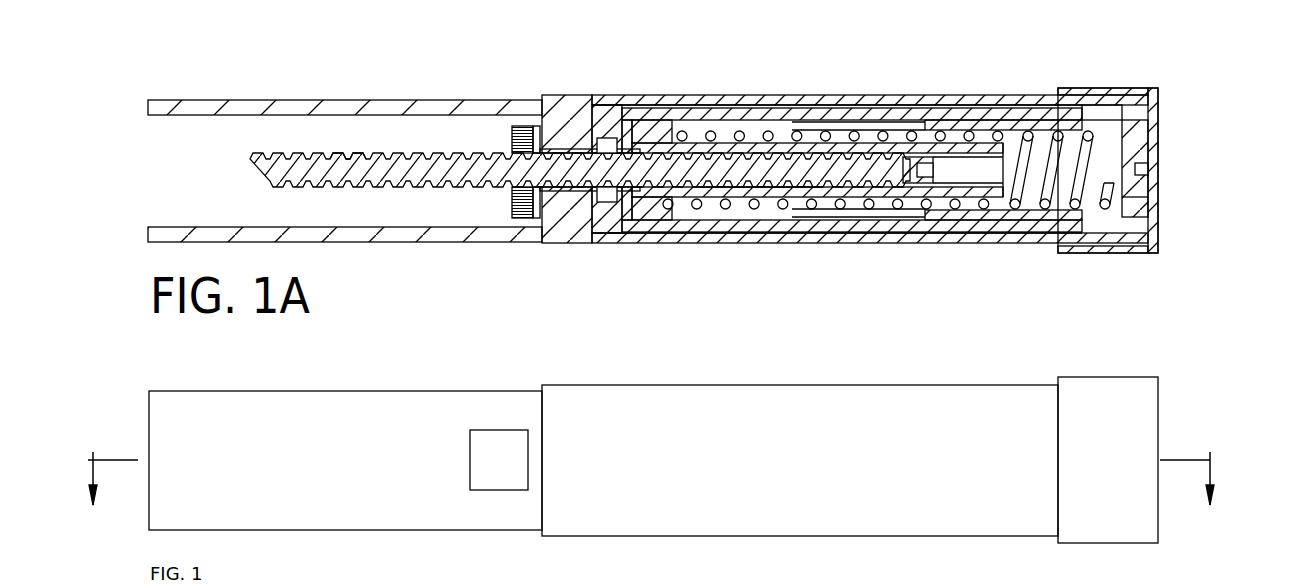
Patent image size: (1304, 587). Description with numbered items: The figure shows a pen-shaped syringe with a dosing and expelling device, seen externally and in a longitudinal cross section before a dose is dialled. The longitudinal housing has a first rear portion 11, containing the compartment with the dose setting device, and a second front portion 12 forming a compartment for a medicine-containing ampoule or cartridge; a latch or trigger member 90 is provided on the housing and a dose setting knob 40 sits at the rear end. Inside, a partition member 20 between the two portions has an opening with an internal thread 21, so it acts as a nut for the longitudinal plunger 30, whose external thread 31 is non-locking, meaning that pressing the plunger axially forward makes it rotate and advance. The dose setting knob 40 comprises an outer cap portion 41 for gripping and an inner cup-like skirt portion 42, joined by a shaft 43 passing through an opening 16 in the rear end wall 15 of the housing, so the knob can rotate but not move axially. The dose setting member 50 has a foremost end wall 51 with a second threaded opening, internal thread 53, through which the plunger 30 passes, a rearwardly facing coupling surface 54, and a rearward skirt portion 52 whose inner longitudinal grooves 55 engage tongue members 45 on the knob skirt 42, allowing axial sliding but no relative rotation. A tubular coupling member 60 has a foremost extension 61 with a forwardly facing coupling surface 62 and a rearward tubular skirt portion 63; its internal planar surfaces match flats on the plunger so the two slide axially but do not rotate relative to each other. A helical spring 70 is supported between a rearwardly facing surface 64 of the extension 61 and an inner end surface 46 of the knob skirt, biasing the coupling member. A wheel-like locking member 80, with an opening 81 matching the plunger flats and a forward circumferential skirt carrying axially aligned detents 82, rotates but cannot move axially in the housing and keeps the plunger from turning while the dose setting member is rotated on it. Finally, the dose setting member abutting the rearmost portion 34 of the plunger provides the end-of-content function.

In FIG. 1, the first (rear) portion 11 is at (925, 430).
In FIG. 1, the second (front) portion 12 is at (342, 430).
In FIG. 1A, the rear end wall 15 is at (1142, 110).
In FIG. 1A, the opening 16 is at (1142, 155).
In FIG. 1A, the partition member 20 is at (556, 114).
In FIG. 1A, the internal thread 21 is at (572, 150).
In FIG. 1A, the plunger 30 is at (282, 173).
In FIG. 1A, the external thread 31 is at (348, 157).
In FIG. 1A, the rearmost portion 34 is at (937, 172).
In FIG. 1, the dose setting knob 40 is at (653, 437).
In FIG. 1A, the outer cap portion 41 is at (1098, 91).
In FIG. 1A, the skirt portion 42 is at (1033, 122).
In FIG. 1A, the shaft 43 is at (1134, 168).
In FIG. 1A, the tongue members 45 is at (977, 118).
In FIG. 1A, the inner end surface 46 is at (1130, 198).
In FIG. 1A, the dose setting member 50 is at (742, 99).
In FIG. 1A, the foremost end wall 51 is at (610, 214).
In FIG. 1A, the skirt portion 52 is at (691, 115).
In FIG. 1A, the internal thread 53 is at (594, 208).
In FIG. 1A, the coupling surface 54 is at (631, 119).
In FIG. 1A, the longitudinal grooves 55 is at (810, 120).
In FIG. 1A, the tubular coupling member 60 is at (768, 207).
In FIG. 1A, the foremost extension 61 is at (655, 208).
In FIG. 1A, the coupling surface 62 is at (640, 218).
In FIG. 1A, the tubular skirt portion 63 is at (740, 194).
In FIG. 1A, the rearwardly facing surface 64 is at (671, 126).
In FIG. 1A, the helical spring 70 is at (883, 130).
In FIG. 1A, the locking member 80 is at (505, 132).
In FIG. 1A, the opening 81 is at (536, 218).
In FIG. 1A, the detents 82 is at (512, 212).
In FIG. 1, the latch or trigger member 90 is at (487, 422).